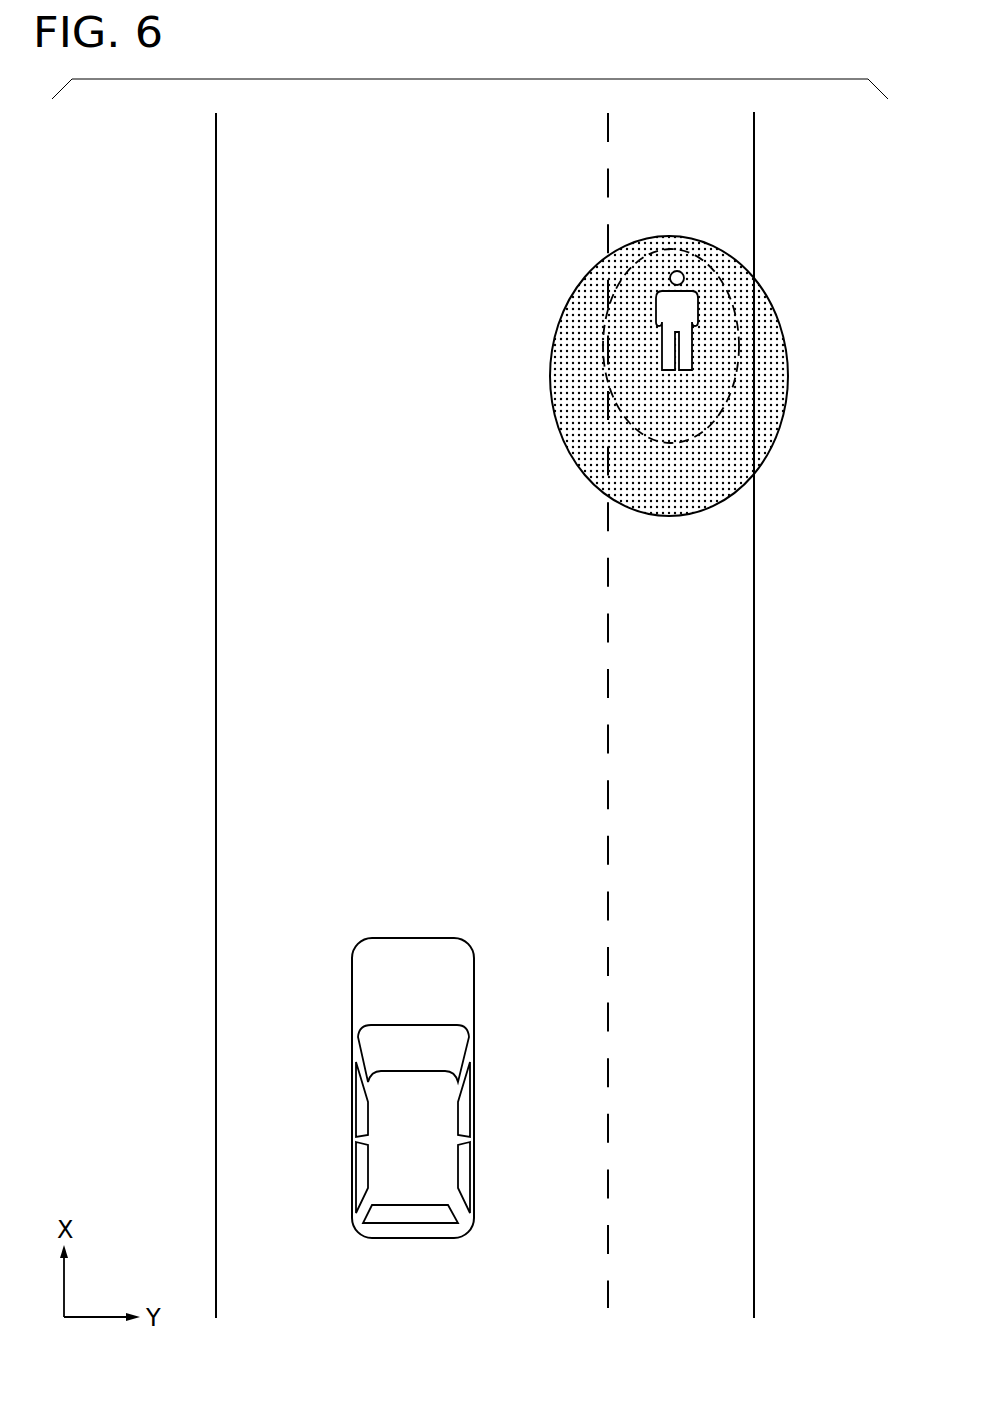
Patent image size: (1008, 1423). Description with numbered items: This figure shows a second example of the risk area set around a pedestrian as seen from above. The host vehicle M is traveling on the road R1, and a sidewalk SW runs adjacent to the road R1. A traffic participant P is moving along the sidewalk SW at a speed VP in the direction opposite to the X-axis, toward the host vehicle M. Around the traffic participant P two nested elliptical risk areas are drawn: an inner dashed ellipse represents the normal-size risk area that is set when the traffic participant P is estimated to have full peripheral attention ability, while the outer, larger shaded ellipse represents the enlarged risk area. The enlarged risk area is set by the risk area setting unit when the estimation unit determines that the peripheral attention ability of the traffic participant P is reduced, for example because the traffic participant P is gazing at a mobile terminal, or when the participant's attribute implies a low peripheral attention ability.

The host vehicle M is at (412, 937).
The traffic participant P is at (675, 270).
The road R1 is at (428, 1310).
The sidewalk SW is at (698, 1310).
The speed VP is at (669, 532).